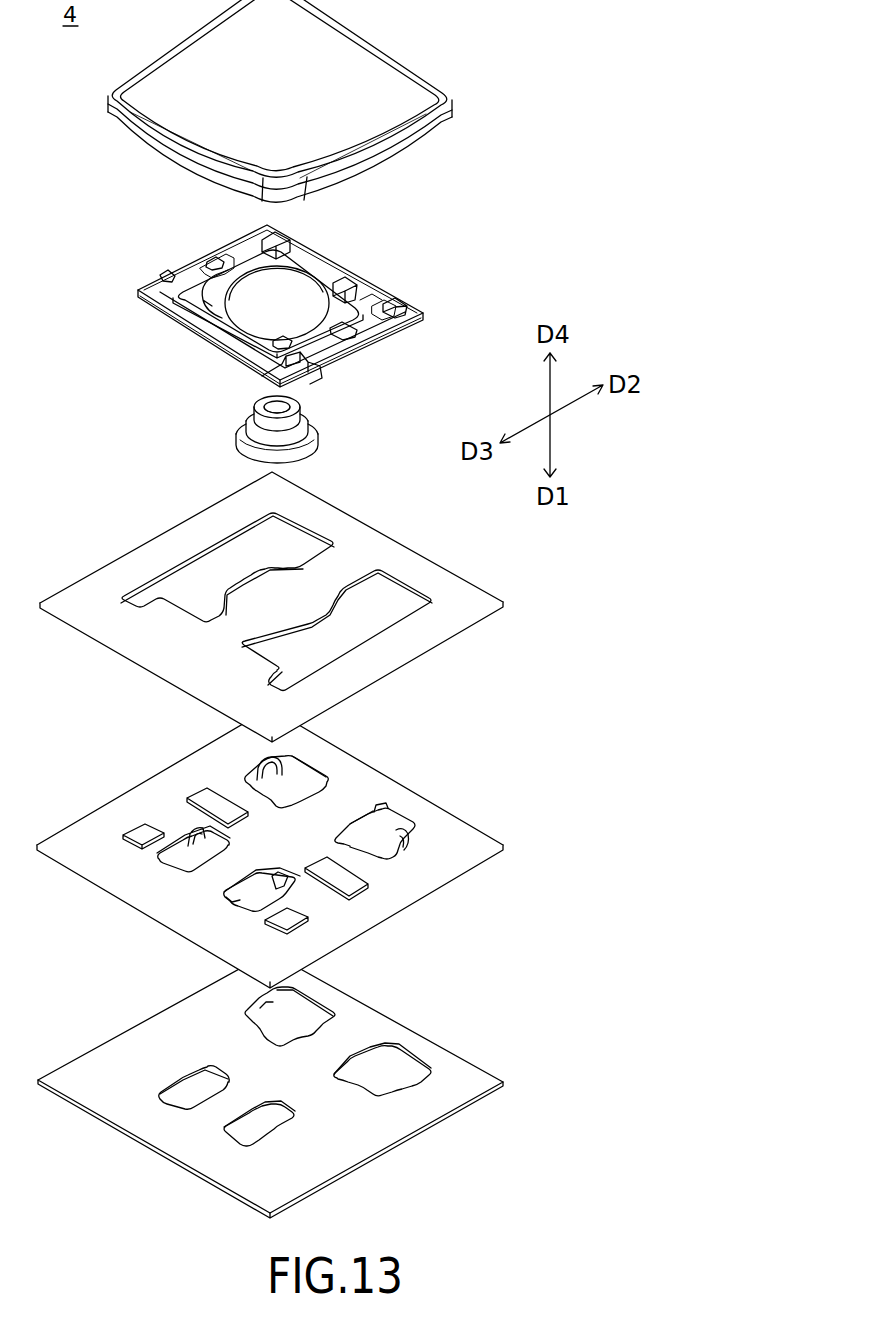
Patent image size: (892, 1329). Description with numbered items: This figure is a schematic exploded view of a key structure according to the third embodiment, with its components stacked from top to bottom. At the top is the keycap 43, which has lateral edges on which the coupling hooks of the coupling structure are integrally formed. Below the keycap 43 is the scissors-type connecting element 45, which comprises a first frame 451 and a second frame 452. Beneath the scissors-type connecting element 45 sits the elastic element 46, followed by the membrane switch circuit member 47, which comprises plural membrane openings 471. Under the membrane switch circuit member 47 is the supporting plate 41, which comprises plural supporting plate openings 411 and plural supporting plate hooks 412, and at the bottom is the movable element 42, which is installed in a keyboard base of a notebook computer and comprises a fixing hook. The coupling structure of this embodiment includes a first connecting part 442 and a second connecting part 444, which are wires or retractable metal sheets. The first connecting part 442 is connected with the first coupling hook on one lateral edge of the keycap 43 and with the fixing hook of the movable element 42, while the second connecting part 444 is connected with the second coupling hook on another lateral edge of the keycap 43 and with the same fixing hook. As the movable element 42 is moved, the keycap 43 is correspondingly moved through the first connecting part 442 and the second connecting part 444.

The supporting plate 41 is at (265, 848).
The supporting plate openings 411 is at (378, 833).
The supporting plate hooks 412 is at (193, 812).
The movable element 42 is at (136, 1043).
The keycap 43 is at (292, 116).
The first connecting part 442 is at (170, 162).
The second connecting part 444 is at (453, 167).
The scissors-type connecting element 45 is at (298, 290).
The first frame 451 is at (381, 320).
The second frame 452 is at (210, 288).
The elastic element 46 is at (308, 414).
The membrane switch circuit member 47 is at (271, 607).
The membrane openings 471 is at (390, 598).